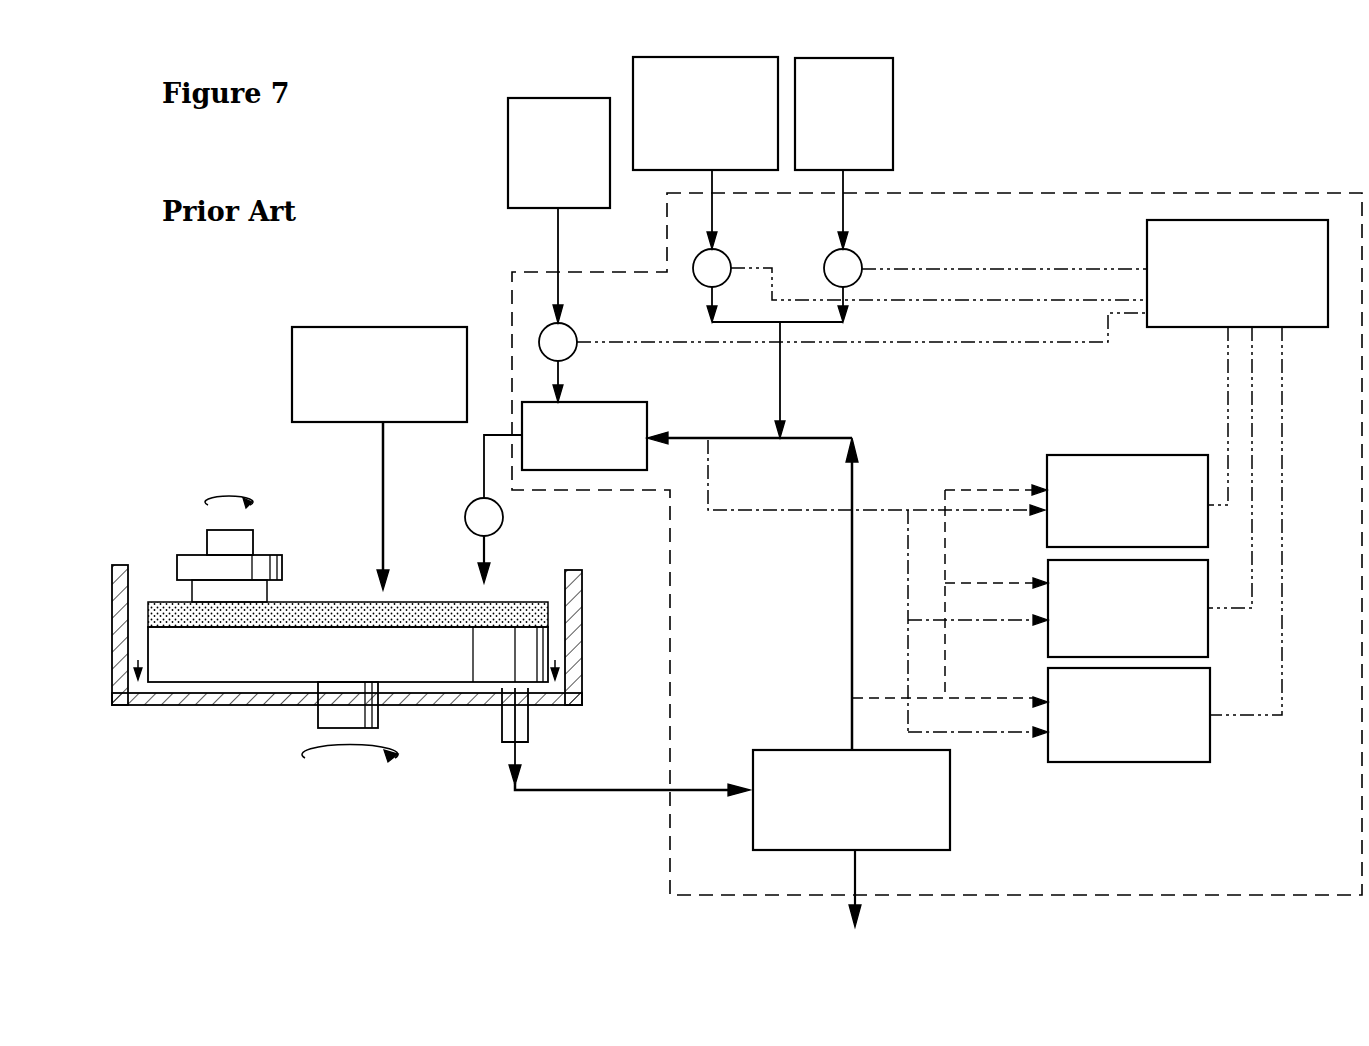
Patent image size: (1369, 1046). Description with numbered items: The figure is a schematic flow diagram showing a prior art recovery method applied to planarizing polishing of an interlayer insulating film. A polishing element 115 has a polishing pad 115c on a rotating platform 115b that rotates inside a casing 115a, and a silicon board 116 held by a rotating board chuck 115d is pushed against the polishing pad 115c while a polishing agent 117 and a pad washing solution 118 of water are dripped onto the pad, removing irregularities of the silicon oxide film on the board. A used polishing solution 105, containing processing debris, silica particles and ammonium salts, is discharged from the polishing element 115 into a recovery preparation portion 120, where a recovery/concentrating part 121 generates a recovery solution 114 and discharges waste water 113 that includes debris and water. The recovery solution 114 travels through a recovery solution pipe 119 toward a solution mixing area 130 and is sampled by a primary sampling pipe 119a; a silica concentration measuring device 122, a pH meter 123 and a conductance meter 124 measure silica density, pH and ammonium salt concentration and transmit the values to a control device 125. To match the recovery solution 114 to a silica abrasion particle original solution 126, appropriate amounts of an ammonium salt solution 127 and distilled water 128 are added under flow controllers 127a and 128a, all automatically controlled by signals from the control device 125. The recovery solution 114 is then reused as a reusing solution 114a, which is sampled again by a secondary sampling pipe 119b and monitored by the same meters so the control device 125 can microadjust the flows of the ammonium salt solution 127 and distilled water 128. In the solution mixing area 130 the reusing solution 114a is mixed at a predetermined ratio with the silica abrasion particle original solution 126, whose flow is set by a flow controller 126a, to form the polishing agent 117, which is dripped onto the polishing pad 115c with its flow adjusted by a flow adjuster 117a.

The used polishing solution 105 is at (518, 760).
The waste water 113 is at (857, 872).
The recovery solution 114 is at (850, 656).
The reusing solution 114a is at (693, 438).
The polishing element 115 is at (347, 659).
The casing 115a is at (237, 706).
The rotating platform 115b is at (197, 660).
The polishing pad 115c is at (342, 605).
The rotating board chuck 115d is at (240, 543).
The silicon board 116 is at (200, 590).
The polishing agent 117 is at (484, 463).
The flow adjuster 117a is at (500, 518).
The pad washing solution 118 is at (376, 327).
The recovery solution pipe 119 is at (852, 570).
The primary sampling pipe 119a is at (877, 697).
The secondary sampling pipe 119b is at (893, 510).
The recovery preparation portion 120 is at (1018, 195).
The recovery/concentrating part 121 is at (952, 803).
The silica concentration measuring device 122 is at (1210, 750).
The pH meter 123 is at (1208, 640).
The conductance meter 124 is at (1120, 455).
The control device 125 is at (1187, 327).
The silica abrasion particle original solution 126 is at (508, 150).
The flow controller 126a is at (568, 332).
The ammonium salt solution 127 is at (651, 170).
The flow controller 127a is at (722, 259).
The distilled water 128 is at (893, 112).
The flow controller 128a is at (854, 262).
The solution mixing area 130 is at (613, 402).